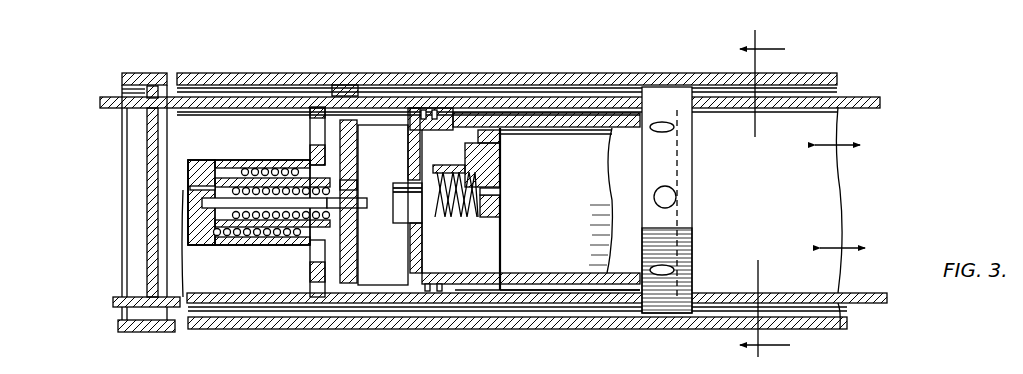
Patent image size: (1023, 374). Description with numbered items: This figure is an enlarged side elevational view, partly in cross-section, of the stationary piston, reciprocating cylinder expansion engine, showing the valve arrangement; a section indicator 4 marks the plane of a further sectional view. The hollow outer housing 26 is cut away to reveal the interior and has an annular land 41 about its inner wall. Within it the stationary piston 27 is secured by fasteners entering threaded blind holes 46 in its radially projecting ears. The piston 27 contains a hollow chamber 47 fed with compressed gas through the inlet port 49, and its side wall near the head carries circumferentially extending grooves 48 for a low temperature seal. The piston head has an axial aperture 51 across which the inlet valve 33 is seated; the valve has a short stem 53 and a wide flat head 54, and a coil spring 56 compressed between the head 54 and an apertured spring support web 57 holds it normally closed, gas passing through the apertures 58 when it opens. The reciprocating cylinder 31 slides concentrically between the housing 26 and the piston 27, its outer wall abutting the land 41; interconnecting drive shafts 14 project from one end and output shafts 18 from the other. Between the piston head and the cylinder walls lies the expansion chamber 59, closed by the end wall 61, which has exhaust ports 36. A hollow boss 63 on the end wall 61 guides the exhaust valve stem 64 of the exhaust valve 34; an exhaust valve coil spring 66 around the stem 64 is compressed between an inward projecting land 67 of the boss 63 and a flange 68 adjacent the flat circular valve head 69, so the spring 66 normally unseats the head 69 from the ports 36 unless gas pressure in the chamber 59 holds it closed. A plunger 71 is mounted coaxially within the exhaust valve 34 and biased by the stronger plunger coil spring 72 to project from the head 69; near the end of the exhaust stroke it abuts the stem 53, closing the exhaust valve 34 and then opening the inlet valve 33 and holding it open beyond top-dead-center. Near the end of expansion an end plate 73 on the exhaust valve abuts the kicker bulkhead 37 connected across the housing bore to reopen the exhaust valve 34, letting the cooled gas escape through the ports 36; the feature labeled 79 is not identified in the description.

The section line 4- 4 is at (751, 193).
The interconnecting drive shafts 14 is at (238, 100).
The output shafts 18 is at (876, 104).
The outer housing 26 is at (430, 74).
The stationary piston 27 is at (527, 286).
The reciprocating cylinder 31 is at (400, 306).
The inlet valve 33 is at (406, 178).
The exhaust valve 34 is at (270, 248).
The exhaust ports 36 is at (322, 136).
The kicker bulkhead 37 is at (148, 160).
The annular land 41 is at (360, 88).
The threaded blind holes 46 is at (672, 128).
The hollow chamber 47 is at (566, 225).
The circumferentially extending grooves 48 is at (428, 112).
The inlet port 49 is at (677, 200).
The piston head aperture 51 is at (410, 232).
The inlet valve stem 53 is at (406, 220).
The inlet valve head 54 is at (430, 240).
The inlet valve coil spring 56 is at (460, 174).
The spring support web 57 is at (505, 180).
The web apertures 58 is at (495, 140).
The expansion chamber 59 is at (396, 285).
The closed end wall 61 is at (318, 116).
The hollow boss 63 is at (228, 248).
The exhaust valve stem 64 is at (202, 214).
The exhaust valve coil spring 66 is at (226, 170).
The inward projecting land 67 is at (226, 246).
The flange 68 is at (296, 246).
The exhaust valve head 69 is at (355, 142).
The plunger 71 is at (357, 210).
The plunger coil spring 72 is at (262, 222).
The end plate 73 is at (190, 188).
The plate portion 79 is at (350, 186).